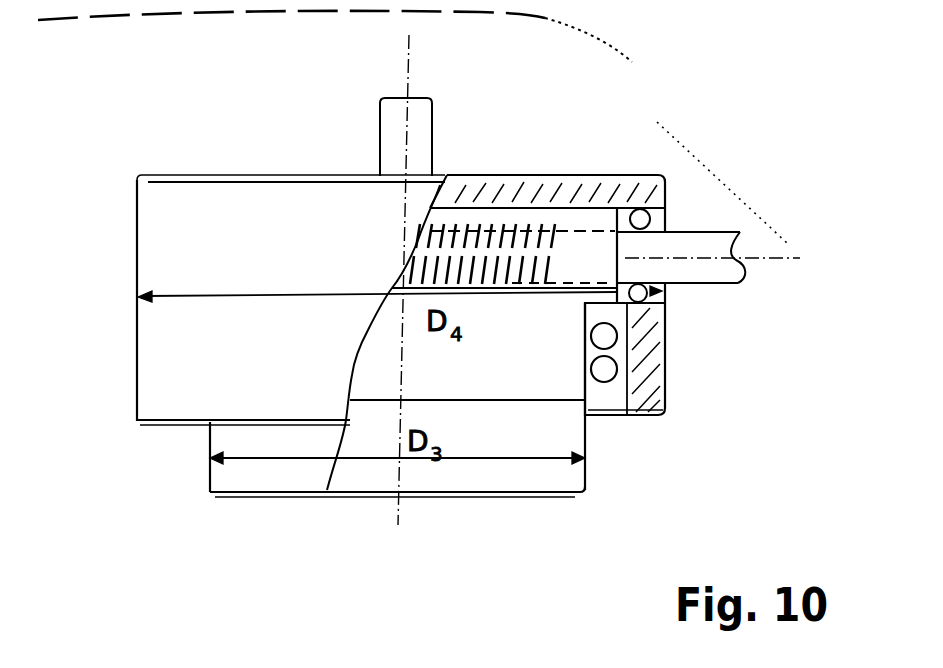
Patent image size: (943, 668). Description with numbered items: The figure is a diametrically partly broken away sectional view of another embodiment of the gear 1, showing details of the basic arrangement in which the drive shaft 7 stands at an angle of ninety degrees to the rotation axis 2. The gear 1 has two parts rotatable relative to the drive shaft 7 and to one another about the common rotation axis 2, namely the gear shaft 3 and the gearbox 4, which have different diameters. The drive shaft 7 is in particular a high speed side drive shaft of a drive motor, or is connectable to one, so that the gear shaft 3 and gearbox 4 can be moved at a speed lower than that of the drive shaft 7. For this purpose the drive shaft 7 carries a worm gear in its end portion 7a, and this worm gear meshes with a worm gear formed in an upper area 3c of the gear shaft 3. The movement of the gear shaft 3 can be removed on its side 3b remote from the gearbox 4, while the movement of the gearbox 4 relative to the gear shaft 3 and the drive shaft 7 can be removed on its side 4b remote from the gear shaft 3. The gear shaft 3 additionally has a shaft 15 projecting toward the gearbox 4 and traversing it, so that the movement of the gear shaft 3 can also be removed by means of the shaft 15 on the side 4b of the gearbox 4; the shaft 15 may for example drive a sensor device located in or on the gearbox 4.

The gear 1 is at (284, 120).
The rotation axis 2 is at (413, 55).
The gear shaft 3 is at (572, 440).
The side of gear shaft remote from gearbox 3b is at (558, 496).
The upper area of gear shaft 3c is at (567, 252).
The gearbox 4 is at (653, 360).
The side of gearbox remote from gear shaft 4b is at (196, 175).
The drive shaft 7 is at (713, 243).
The end portion of drive shaft 7a is at (505, 222).
The shaft 15 is at (418, 143).